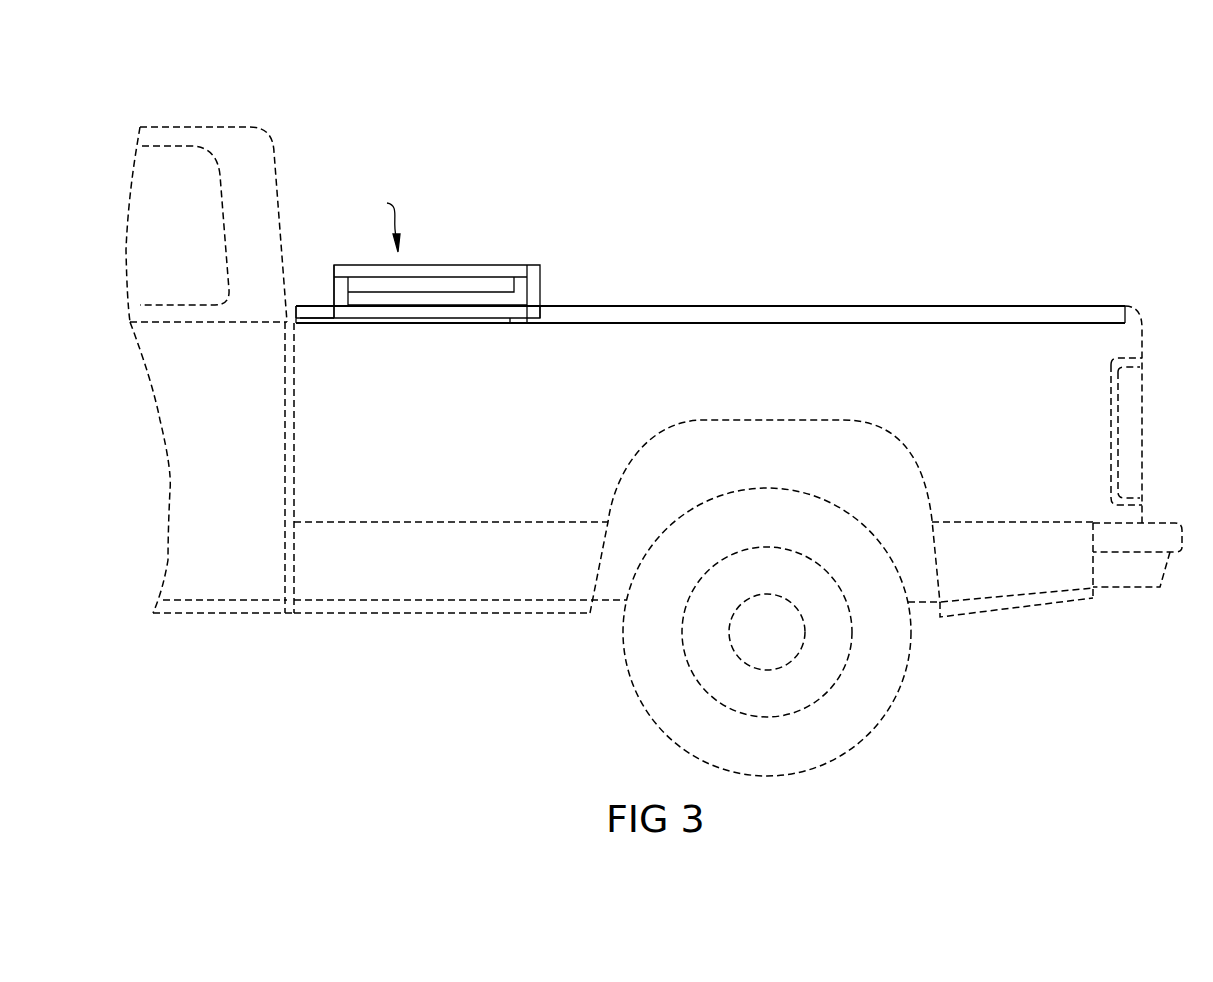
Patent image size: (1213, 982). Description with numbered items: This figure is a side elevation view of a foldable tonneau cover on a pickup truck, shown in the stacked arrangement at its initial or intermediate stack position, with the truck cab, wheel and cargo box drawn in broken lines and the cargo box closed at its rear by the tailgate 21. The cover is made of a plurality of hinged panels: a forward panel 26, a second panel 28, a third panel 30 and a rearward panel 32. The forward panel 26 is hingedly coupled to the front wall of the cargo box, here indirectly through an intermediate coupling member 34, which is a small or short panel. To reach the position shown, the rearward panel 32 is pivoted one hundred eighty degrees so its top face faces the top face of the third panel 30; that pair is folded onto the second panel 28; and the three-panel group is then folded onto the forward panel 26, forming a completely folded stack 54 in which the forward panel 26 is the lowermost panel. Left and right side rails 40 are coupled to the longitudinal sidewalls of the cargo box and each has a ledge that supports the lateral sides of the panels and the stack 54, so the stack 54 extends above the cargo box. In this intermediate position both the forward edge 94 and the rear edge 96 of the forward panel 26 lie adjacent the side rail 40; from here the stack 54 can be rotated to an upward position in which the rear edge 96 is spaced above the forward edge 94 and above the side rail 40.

The tailgate 21 is at (1140, 331).
The forward panel 26 is at (422, 315).
The second panel 28 is at (515, 270).
The third panel 30 is at (455, 300).
The rearward panel 32 is at (450, 285).
The intermediate coupling member 34 is at (313, 308).
The side rail 40 is at (733, 313).
The stack 54 is at (382, 224).
The forward edge 94 is at (330, 312).
The rear edge 96 is at (543, 310).